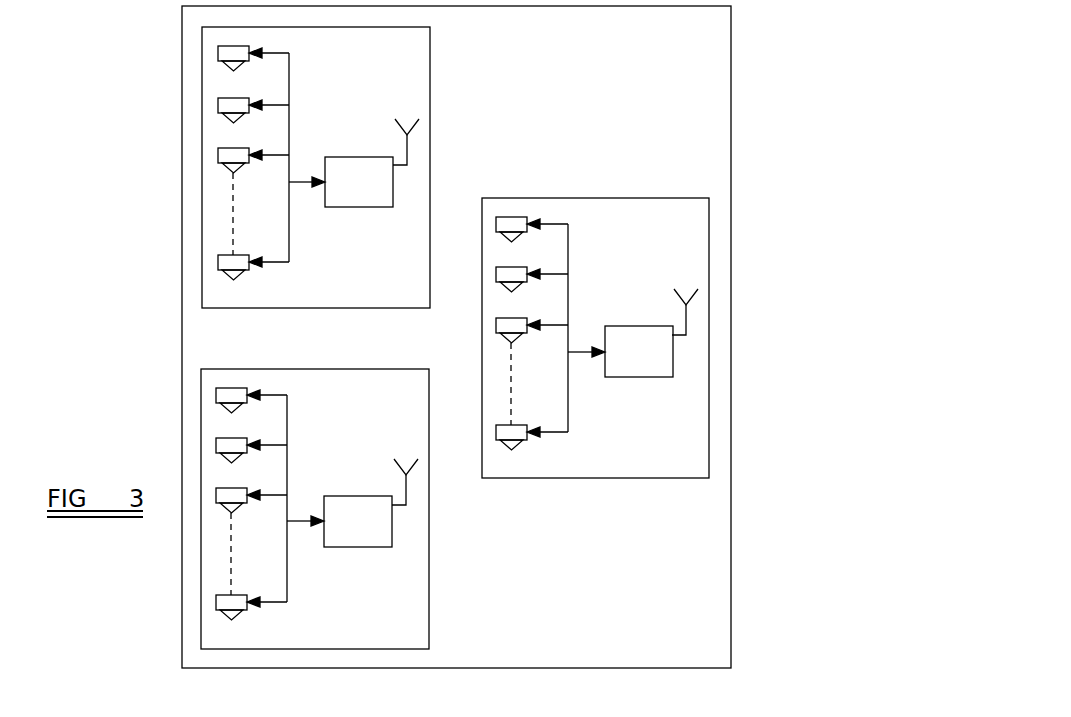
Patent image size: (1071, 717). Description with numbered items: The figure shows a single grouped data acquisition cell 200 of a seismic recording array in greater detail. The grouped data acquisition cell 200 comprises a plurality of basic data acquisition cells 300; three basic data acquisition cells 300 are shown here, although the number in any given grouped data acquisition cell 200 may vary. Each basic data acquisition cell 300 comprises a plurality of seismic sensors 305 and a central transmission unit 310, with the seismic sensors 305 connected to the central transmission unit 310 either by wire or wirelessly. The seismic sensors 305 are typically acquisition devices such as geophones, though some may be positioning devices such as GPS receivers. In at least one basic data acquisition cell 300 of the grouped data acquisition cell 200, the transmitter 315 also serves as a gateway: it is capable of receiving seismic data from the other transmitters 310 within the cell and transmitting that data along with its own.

The grouped data acquisition cell 200 is at (732, 86).
The basic data acquisition cell 300 is at (466, 338).
The seismic sensor 305 is at (218, 108).
The central transmission unit 310 is at (393, 193).
The transmitter 315 is at (673, 368).